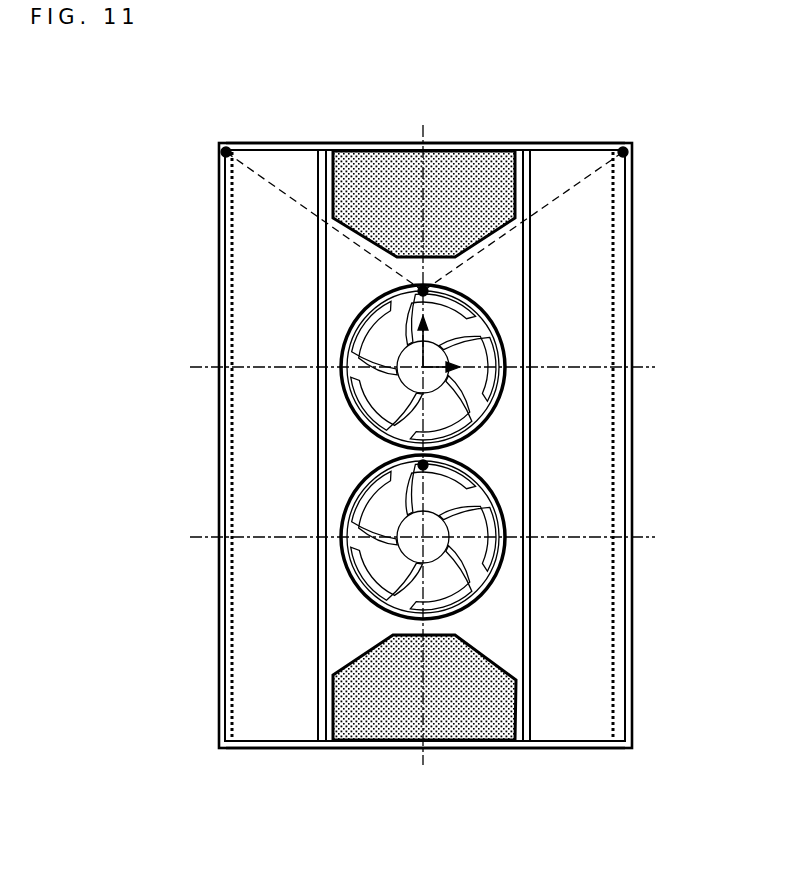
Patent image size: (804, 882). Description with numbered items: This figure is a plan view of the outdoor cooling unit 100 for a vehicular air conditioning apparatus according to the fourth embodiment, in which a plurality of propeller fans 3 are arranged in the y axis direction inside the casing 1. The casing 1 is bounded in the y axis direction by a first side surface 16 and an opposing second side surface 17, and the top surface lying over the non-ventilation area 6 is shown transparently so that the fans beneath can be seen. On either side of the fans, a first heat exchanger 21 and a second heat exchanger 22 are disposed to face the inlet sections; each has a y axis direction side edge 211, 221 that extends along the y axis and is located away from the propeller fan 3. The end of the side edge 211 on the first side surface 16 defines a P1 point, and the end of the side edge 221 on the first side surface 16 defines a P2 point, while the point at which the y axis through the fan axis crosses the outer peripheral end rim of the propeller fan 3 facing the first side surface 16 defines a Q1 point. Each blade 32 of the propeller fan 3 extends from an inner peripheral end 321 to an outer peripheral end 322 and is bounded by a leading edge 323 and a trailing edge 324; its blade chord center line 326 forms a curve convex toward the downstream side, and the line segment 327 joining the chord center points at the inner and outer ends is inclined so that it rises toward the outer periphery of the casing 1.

The casing 1 is at (511, 753).
The outdoor cooling unit 100 is at (409, 836).
The propeller fan 3 is at (411, 346).
The non-ventilation area 6 is at (383, 170).
The first side surface 16 is at (301, 144).
The second side surface 17 is at (290, 749).
The first heat exchanger 21 is at (240, 513).
The y axis direction side edge 211 is at (234, 456).
The second heat exchanger 22 is at (596, 519).
The y axis direction side edge 221 is at (622, 460).
The blade 32 is at (411, 346).
The inner peripheral end 321 is at (368, 378).
The outer peripheral end 322 is at (372, 305).
The leading edge 323 is at (430, 293).
The trailing edge 324 is at (396, 362).
The blade chord center line 326 is at (365, 346).
The line segment 327 is at (475, 340).
The P1 point P1 is at (224, 152).
The P2 point P2 is at (625, 152).
The Q1 point Q1 is at (421, 290).